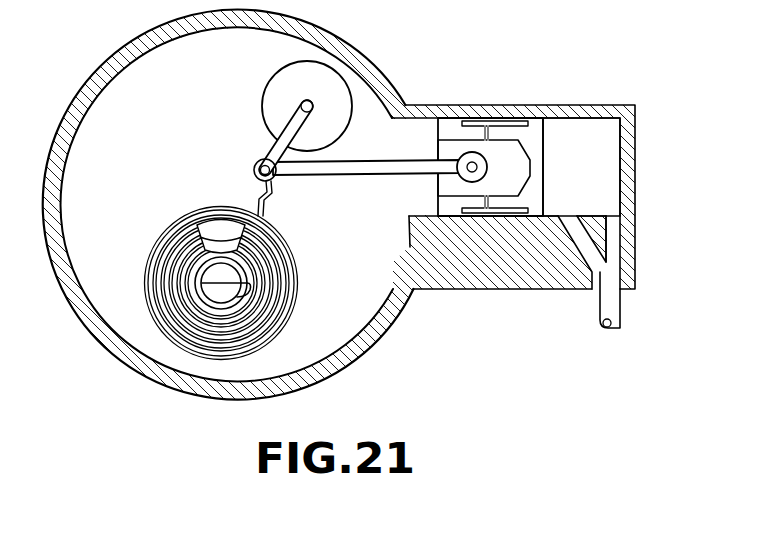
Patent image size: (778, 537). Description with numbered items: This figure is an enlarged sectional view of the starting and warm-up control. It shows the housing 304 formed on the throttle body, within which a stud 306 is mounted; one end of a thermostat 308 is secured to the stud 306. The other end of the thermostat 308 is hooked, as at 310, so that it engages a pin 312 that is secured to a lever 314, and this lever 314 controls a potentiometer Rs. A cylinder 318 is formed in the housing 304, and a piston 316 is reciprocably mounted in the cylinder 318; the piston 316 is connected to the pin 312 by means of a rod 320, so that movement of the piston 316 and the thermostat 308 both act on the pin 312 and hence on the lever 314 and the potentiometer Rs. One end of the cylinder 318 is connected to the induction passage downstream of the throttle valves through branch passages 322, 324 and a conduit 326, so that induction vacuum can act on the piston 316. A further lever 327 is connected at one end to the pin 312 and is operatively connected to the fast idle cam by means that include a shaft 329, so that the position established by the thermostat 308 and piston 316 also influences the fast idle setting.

The housing 304 is at (333, 55).
The stud 306 is at (237, 297).
The thermostat 308 is at (298, 271).
The hooked end 310 is at (278, 187).
The pin 312 is at (259, 170).
The lever 314 is at (283, 132).
The piston 316 is at (533, 118).
The cylinder 318 is at (590, 130).
The rod 320 is at (381, 168).
The branch passage 322 is at (579, 244).
The branch passage 324 is at (612, 233).
The conduit 326 is at (615, 313).
The lever 327 is at (254, 192).
The shaft 329 is at (175, 222).
The potentiometer Rs is at (338, 127).